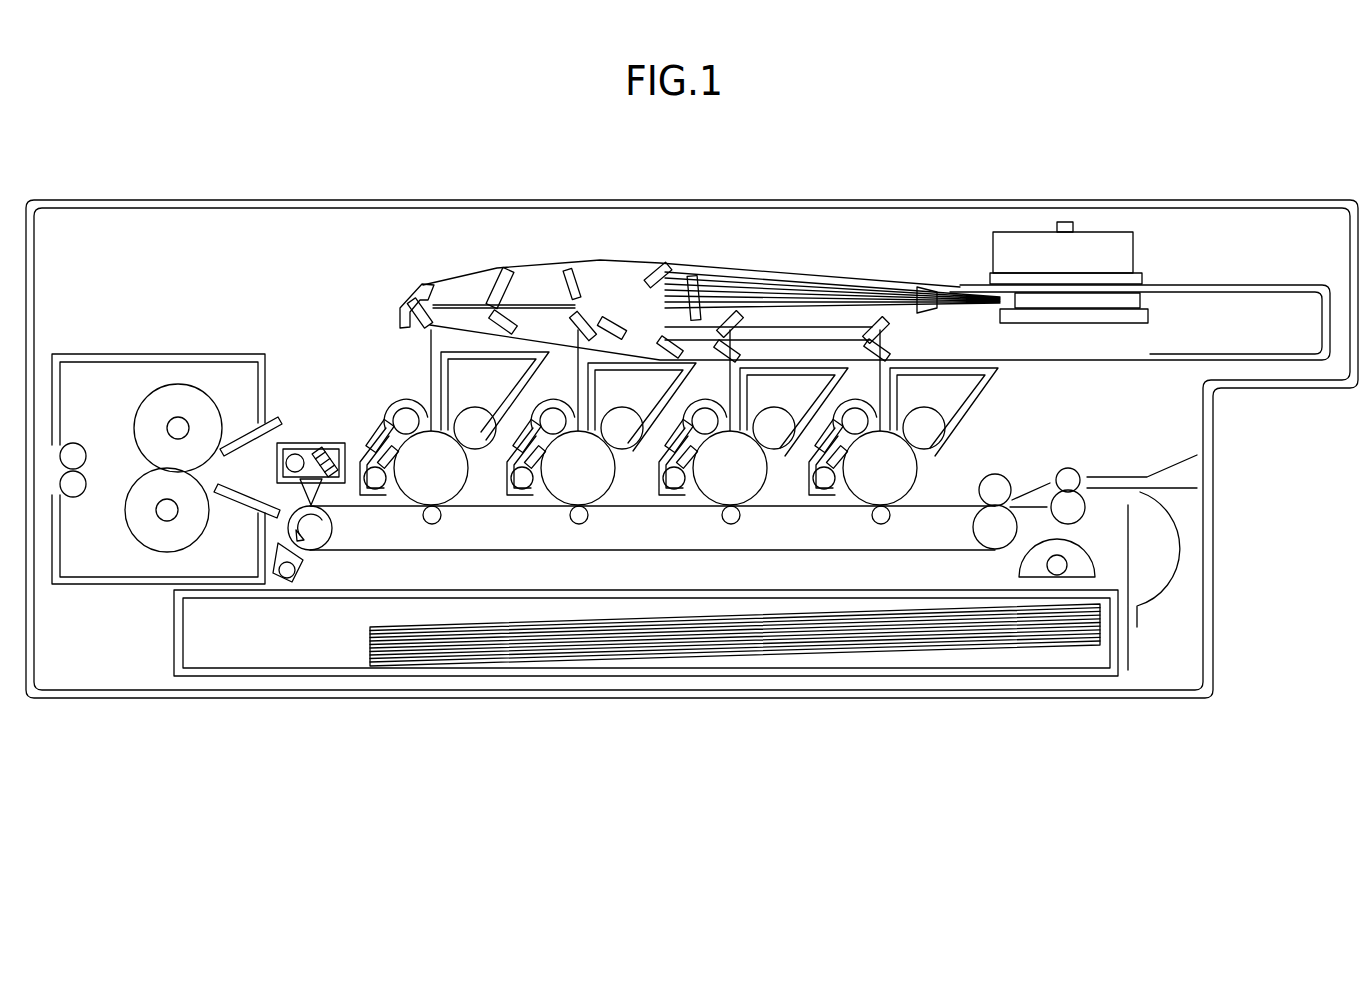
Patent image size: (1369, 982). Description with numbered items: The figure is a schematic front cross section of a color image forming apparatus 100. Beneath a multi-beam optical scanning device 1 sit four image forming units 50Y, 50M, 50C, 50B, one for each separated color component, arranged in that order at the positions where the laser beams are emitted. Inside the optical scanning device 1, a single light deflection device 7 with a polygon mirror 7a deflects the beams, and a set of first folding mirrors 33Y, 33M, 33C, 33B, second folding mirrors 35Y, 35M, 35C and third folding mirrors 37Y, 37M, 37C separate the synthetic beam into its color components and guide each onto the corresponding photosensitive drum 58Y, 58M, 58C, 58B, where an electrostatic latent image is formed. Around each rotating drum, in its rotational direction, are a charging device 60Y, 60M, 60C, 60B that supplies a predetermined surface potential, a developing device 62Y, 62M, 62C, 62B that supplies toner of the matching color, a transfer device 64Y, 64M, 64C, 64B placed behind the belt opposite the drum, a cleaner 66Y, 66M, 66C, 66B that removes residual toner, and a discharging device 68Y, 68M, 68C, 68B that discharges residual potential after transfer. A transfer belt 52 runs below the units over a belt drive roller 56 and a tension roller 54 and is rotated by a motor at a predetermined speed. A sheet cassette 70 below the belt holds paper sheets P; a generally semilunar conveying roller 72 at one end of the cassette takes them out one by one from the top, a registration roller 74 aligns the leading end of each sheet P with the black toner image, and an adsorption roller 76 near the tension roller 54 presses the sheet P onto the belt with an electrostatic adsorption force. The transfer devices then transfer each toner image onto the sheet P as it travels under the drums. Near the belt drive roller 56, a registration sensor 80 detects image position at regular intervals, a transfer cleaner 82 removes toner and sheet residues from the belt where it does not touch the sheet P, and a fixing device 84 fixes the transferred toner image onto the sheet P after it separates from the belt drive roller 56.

The image forming apparatus 100 is at (1128, 199).
The optical scanning device 1 is at (1043, 362).
The light deflection device 7 is at (1137, 262).
The polygon mirror 7a is at (1148, 318).
The first folding mirror 33B is at (410, 312).
The first folding mirror 33C is at (500, 312).
The first folding mirror 33M is at (578, 318).
The first folding mirror 33Y is at (696, 290).
The second folding mirror 35C is at (500, 302).
The second folding mirror 35M is at (618, 318).
The second folding mirror 35Y is at (652, 268).
The third folding mirror 37C is at (588, 296).
The third folding mirror 37M is at (742, 322).
The third folding mirror 37Y is at (888, 330).
The image forming unit 50B is at (513, 394).
The image forming unit 50C is at (654, 404).
The image forming unit 50M is at (811, 405).
The image forming unit 50Y is at (962, 405).
The transfer belt 52 is at (932, 505).
The tension roller 54 is at (993, 540).
The belt drive roller 56 is at (320, 540).
The photosensitive drum 58B is at (425, 507).
The photosensitive drum 58C is at (590, 482).
The photosensitive drum 58M is at (745, 485).
The photosensitive drum 58Y is at (903, 485).
The charging device 60B is at (405, 415).
The charging device 60C is at (552, 412).
The charging device 60M is at (706, 412).
The charging device 60Y is at (858, 418).
The developing device 62B is at (470, 452).
The developing device 62C is at (627, 440).
The developing device 62M is at (777, 438).
The developing device 62Y is at (943, 430).
The transfer device 64B is at (428, 522).
The transfer device 64C is at (580, 523).
The transfer device 64M is at (731, 524).
The transfer device 64Y is at (884, 524).
The cleaner 66B is at (378, 492).
The cleaner 66C is at (524, 490).
The cleaner 66M is at (675, 492).
The cleaner 66Y is at (823, 492).
The discharging device 68B is at (378, 437).
The discharging device 68C is at (535, 402).
The discharging device 68M is at (685, 402).
The discharging device 68Y is at (852, 397).
The sheet cassette 70 is at (1072, 658).
The conveying roller 72 is at (1072, 545).
The registration roller 74 is at (1068, 470).
The adsorption roller 76 is at (996, 486).
The registration sensor 80 is at (312, 442).
The transfer cleaner 82 is at (285, 585).
The fixing device 84 is at (108, 562).
The paper sheet P is at (965, 650).